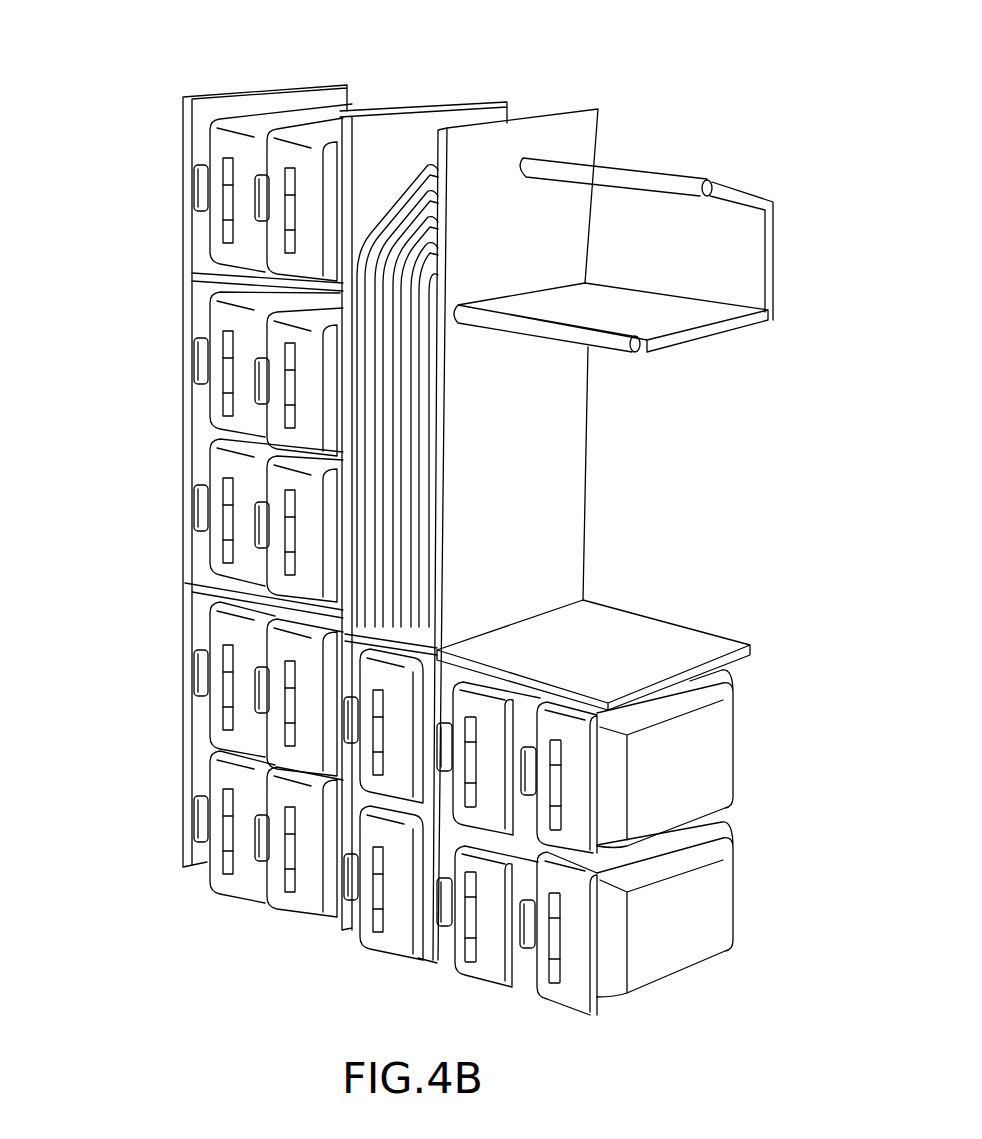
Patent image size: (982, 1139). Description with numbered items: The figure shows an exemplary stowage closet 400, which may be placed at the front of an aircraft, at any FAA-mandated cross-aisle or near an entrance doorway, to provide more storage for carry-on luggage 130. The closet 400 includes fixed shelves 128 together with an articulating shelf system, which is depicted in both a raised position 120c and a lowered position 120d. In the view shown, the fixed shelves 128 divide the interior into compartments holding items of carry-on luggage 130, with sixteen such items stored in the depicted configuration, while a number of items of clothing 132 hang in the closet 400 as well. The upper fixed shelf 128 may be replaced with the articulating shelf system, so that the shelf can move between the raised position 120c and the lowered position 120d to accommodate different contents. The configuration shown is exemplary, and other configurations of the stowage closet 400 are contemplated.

The stowage closet 400 is at (461, 509).
The fixed shelves 128 is at (210, 268).
The carry-on luggage 130 is at (717, 772).
The items of clothing 132 is at (428, 293).
The raised position 120c is at (672, 153).
The lowered position 120d is at (647, 562).